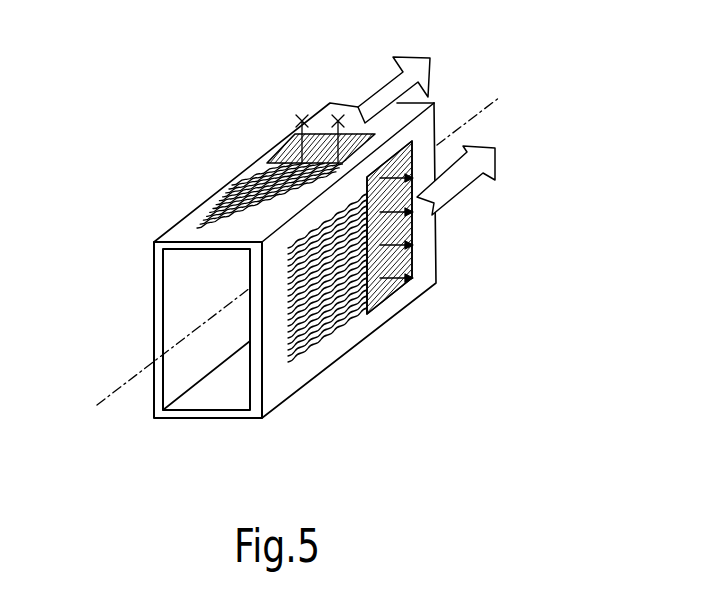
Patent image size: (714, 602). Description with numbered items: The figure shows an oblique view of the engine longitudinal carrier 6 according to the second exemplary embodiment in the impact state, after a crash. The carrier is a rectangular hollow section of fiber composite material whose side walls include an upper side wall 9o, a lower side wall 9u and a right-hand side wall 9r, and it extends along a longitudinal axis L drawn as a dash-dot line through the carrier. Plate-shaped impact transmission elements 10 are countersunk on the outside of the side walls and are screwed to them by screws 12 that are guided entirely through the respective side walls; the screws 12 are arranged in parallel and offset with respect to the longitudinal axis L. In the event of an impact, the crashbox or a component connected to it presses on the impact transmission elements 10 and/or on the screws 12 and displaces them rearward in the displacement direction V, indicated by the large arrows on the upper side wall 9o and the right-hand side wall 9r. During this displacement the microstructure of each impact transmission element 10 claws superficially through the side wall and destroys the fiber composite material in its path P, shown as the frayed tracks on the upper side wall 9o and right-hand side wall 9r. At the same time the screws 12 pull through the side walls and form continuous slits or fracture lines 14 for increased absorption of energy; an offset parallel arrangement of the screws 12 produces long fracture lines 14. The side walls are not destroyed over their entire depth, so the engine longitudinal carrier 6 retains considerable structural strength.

The engine longitudinal carrier 6 is at (367, 336).
The upper side wall 9o is at (192, 230).
The lower side wall 9u is at (207, 418).
The right-hand side wall 9r is at (290, 401).
The impact transmission element 10 is at (388, 300).
The screw 12 is at (302, 113).
The fracture line 14 is at (255, 176).
The path P is at (237, 200).
The displacement direction V is at (381, 90).
The longitudinal axis L is at (293, 251).